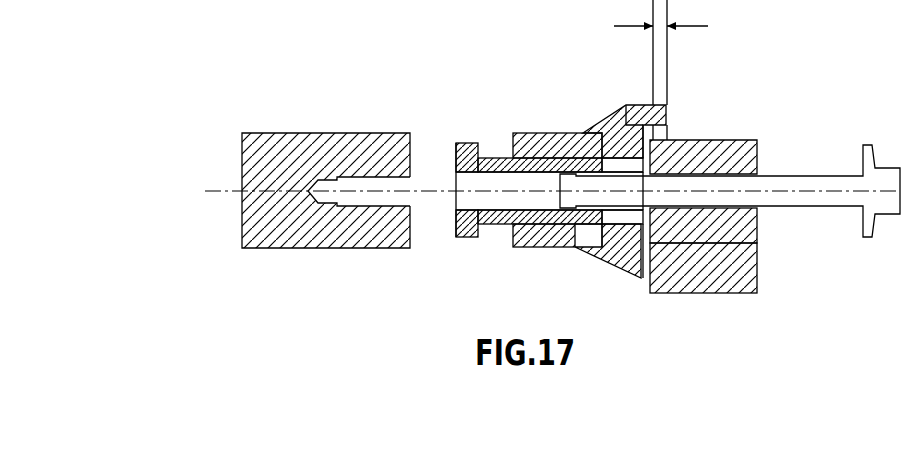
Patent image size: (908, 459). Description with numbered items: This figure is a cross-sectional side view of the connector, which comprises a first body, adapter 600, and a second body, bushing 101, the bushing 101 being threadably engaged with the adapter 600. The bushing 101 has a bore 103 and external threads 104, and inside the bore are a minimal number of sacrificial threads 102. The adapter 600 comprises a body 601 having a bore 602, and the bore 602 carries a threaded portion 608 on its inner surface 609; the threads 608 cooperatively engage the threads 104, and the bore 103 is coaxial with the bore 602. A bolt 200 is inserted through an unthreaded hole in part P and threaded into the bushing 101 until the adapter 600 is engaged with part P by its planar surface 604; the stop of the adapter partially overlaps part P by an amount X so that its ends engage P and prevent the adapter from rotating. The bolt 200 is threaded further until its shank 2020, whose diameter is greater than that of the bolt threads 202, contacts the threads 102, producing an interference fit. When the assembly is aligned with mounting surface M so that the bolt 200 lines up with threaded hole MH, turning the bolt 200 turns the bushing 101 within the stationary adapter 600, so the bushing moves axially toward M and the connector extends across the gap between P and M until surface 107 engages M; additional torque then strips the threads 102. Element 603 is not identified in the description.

The mounting surface M is at (297, 228).
The threaded hole MH is at (348, 185).
The bushing 101 is at (462, 236).
The threads 102 is at (573, 250).
The bore 103 is at (525, 203).
The threads 104 is at (497, 158).
The surface 107 is at (459, 218).
The inner surface 609 is at (612, 168).
The upper clamp block 603 is at (512, 136).
The body 601 is at (606, 128).
The bore 602 is at (620, 272).
The threaded portion 608 is at (621, 105).
The adapter 600 is at (600, 268).
The planar surface 604 is at (690, 140).
The bolt threads 202 is at (730, 142).
The shank 2020 is at (738, 206).
The part P is at (726, 250).
The bolt 200 is at (791, 200).
The overlap amount X is at (653, 26).